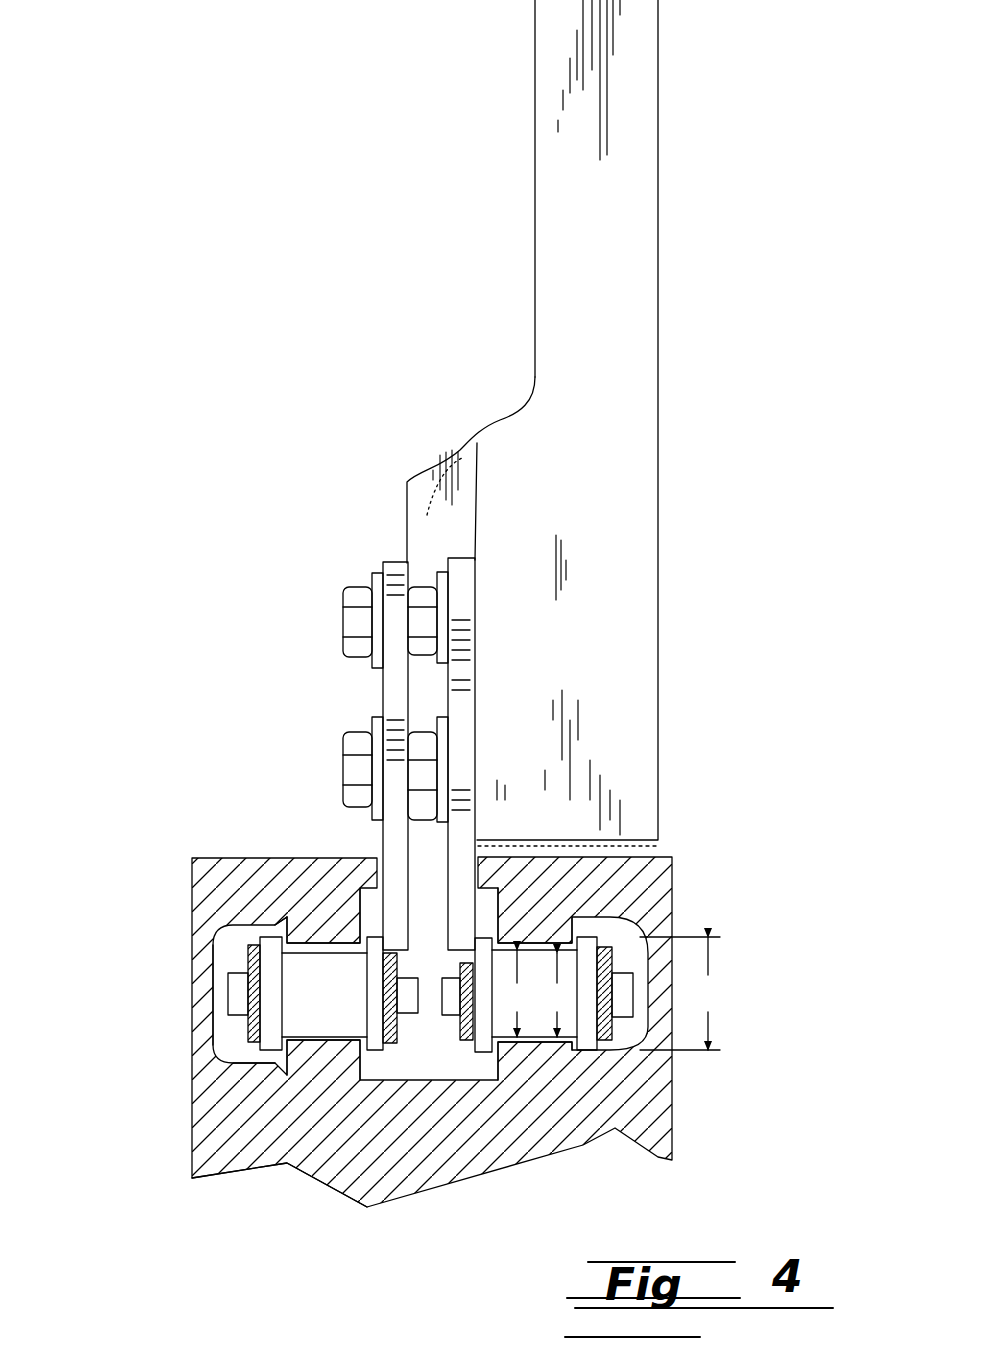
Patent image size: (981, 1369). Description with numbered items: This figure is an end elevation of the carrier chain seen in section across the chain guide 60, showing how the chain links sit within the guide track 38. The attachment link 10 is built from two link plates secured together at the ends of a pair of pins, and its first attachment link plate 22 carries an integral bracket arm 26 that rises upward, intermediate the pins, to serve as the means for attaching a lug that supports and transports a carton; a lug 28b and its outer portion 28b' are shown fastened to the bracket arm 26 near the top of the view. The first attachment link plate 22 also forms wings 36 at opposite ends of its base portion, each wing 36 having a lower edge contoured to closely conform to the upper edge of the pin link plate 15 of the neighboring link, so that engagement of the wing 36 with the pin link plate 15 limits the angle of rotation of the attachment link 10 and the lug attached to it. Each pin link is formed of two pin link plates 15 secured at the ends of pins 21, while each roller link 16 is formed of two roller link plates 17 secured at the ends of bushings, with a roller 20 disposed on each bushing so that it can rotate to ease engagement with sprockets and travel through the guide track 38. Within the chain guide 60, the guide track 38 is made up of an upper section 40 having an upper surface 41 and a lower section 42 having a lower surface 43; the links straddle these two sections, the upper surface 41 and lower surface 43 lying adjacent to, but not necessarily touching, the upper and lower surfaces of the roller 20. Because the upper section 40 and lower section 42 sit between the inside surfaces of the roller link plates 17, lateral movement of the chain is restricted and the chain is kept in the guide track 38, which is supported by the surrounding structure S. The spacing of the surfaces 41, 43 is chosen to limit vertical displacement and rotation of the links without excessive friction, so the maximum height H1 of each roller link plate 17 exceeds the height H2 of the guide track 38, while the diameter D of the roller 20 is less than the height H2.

The attachment link 10 is at (458, 517).
The bent end of column flange 28b' is at (426, 439).
The column flange plate 28b is at (382, 684).
The bracket arm 26 is at (392, 667).
The wing 36 is at (383, 917).
The support bracket S is at (215, 857).
The upper section 40 is at (340, 932).
The lower section 42 is at (340, 1085).
The roller 20 is at (340, 1008).
The upper surface 41 is at (253, 977).
The pin link plate 15 is at (253, 957).
The pin 21 is at (227, 987).
The lower surface 43 is at (257, 978).
The guide track 38 is at (230, 1031).
The roller link 16 is at (262, 1045).
The roller link plate 17 is at (275, 925).
The first attachment link plate 22 is at (420, 1040).
The maximum height of roller link plate H1 is at (687, 993).
The height of guide track H2 is at (517, 993).
The diameter of roller D is at (556, 995).
The chain guide 60 is at (208, 1200).